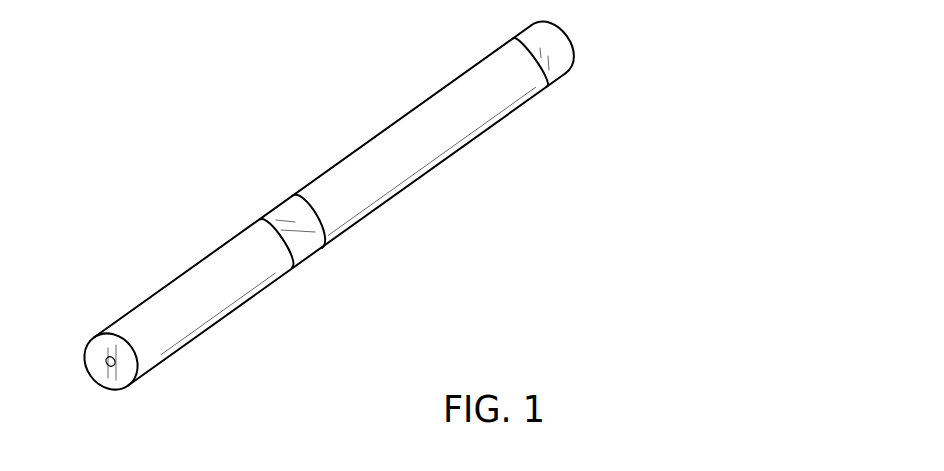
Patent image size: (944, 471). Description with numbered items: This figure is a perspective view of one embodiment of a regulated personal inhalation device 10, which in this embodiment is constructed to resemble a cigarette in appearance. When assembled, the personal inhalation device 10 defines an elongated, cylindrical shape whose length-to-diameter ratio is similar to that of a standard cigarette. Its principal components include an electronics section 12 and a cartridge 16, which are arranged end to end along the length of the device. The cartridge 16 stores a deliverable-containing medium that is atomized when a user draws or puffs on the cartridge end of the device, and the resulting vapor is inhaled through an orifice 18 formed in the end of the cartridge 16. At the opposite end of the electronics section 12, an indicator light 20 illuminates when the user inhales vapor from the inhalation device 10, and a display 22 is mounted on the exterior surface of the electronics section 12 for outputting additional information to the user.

The regulated personal inhalation device 10 is at (265, 125).
The electronics section 12 is at (428, 118).
The cartridge 16 is at (185, 320).
The orifice 18 is at (106, 364).
The indicator light 20 is at (549, 80).
The display 22 is at (307, 241).